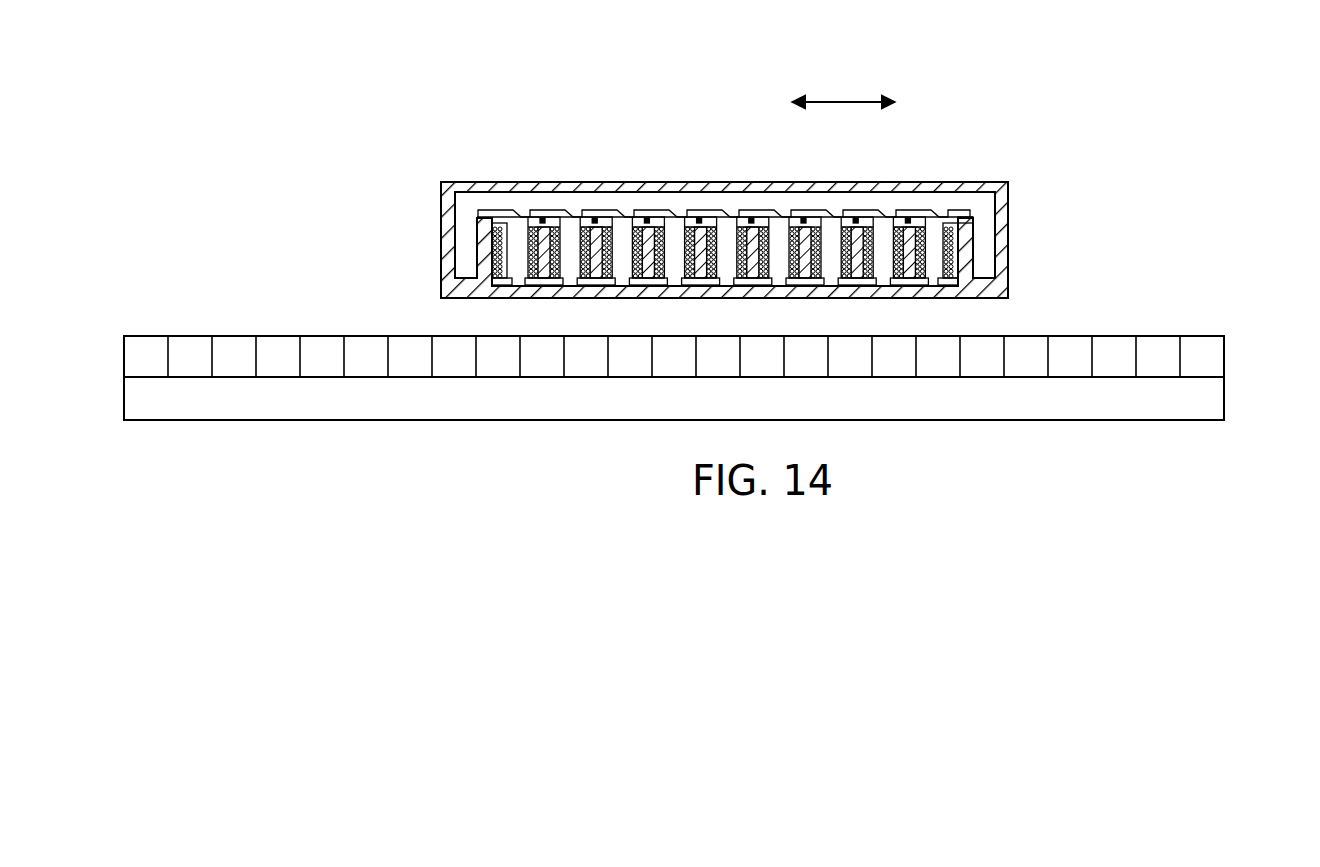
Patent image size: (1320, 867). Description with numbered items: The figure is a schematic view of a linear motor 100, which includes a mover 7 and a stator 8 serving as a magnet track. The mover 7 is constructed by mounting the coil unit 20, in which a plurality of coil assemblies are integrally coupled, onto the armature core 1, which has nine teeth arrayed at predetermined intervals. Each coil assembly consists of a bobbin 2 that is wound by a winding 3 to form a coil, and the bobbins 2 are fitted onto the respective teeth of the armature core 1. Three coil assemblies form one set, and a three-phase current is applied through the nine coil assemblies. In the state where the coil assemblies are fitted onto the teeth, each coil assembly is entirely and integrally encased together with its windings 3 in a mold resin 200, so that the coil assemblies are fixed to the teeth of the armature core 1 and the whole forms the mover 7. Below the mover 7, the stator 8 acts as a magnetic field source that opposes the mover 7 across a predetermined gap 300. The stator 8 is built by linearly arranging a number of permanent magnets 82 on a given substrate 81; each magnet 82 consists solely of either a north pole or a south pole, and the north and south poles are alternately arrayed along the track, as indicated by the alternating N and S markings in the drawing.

The linear motor 100 is at (336, 106).
The mold resin 200 is at (822, 182).
The mover 7 is at (1030, 198).
The coil unit 20 is at (627, 204).
The bobbin 2 is at (518, 210).
The armature core 1 is at (943, 209).
The winding 3 is at (970, 219).
The gap 300 is at (992, 317).
The stator 8 is at (1258, 372).
The substrate 81 is at (1175, 413).
The permanent magnets 82 is at (1157, 341).